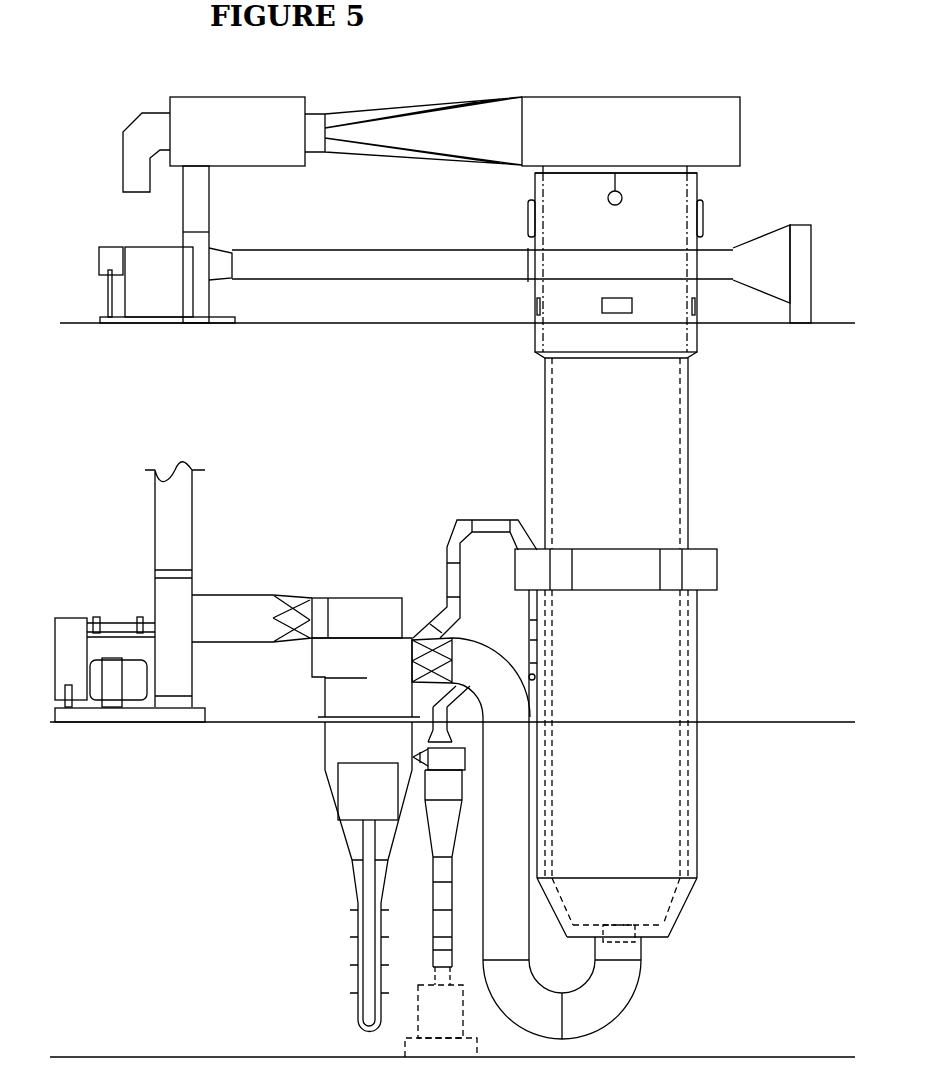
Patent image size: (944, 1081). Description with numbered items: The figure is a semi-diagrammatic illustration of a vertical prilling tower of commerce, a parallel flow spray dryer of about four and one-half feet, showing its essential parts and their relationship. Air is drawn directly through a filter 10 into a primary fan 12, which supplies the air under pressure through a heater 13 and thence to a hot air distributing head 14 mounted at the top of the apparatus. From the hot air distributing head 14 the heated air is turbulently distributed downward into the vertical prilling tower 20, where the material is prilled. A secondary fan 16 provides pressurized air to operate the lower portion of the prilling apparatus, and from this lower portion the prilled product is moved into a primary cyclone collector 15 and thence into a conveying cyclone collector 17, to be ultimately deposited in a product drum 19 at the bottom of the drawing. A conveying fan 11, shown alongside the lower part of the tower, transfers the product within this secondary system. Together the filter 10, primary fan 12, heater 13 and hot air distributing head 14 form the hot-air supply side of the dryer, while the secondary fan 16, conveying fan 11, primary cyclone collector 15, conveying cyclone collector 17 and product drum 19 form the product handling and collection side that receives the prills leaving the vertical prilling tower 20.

The filter 10 is at (812, 290).
The conveying fan 11 is at (538, 660).
The primary fan 12 is at (183, 303).
The heater 13 is at (273, 168).
The hot air distributing head 14 is at (597, 105).
The primary cyclone collector 15 is at (370, 612).
The secondary fan 16 is at (167, 610).
The conveying cyclone collector 17 is at (455, 790).
The product drum 19 is at (432, 986).
The vertical prilling tower 20 is at (545, 405).